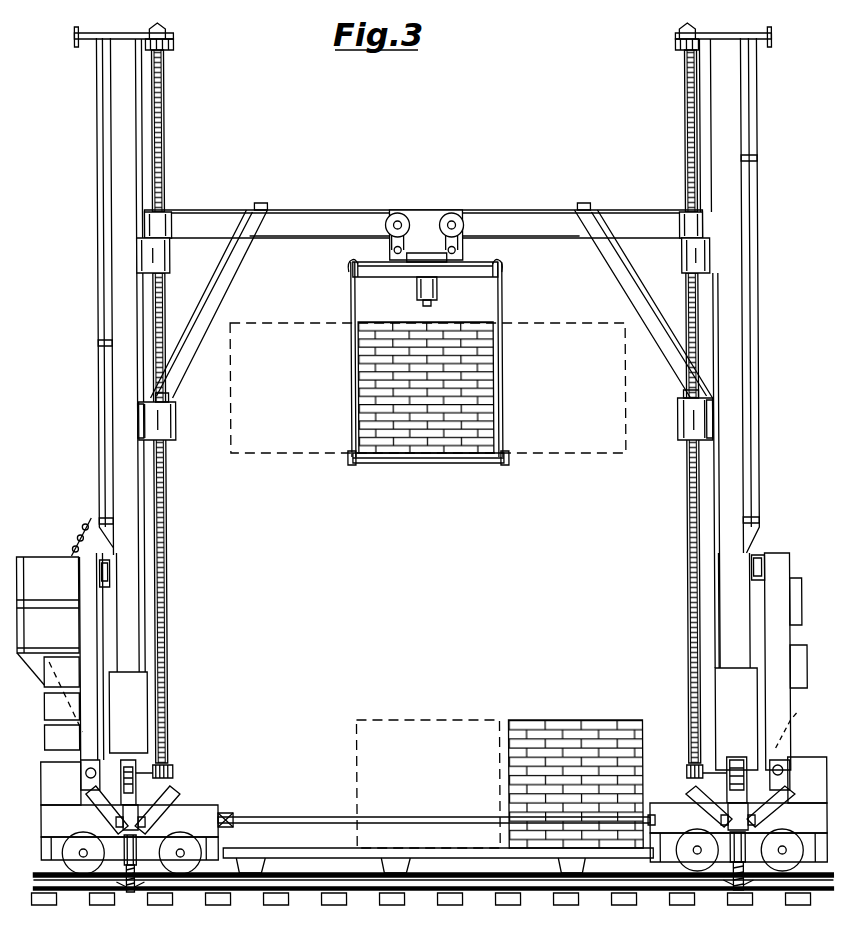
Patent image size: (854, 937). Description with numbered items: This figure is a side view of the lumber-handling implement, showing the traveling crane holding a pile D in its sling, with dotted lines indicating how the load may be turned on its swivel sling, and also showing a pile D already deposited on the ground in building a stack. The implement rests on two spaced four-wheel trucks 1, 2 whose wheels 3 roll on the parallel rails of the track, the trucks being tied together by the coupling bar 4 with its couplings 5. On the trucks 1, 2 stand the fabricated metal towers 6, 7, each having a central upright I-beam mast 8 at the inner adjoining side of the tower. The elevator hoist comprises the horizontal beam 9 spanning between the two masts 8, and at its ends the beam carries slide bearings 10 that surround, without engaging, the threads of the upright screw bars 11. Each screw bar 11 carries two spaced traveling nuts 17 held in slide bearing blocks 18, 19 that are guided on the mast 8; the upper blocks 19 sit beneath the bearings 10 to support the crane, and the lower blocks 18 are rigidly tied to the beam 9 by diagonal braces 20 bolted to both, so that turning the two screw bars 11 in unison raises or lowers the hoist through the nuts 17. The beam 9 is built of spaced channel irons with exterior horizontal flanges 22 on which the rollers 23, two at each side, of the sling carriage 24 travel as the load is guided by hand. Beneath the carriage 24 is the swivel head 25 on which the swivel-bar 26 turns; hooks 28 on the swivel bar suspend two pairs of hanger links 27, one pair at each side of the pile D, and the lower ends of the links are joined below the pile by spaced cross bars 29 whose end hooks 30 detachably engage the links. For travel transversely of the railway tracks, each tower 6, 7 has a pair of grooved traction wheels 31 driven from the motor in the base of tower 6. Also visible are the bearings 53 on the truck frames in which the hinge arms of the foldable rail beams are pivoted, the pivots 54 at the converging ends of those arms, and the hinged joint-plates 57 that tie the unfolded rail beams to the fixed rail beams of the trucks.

The truck 1 is at (196, 818).
The truck 2 is at (668, 810).
The wheels 3 is at (178, 872).
The coupling bar 4 is at (288, 822).
The couplings 5 is at (226, 818).
The tower 6 is at (117, 397).
The tower 7 is at (727, 447).
The mast 8 is at (142, 520).
The horizontal beam 9 is at (318, 222).
The slide bearings 10 is at (160, 222).
The screw bars 11 is at (165, 138).
The traveling nuts 17 is at (176, 427).
The slide bearing block 18 is at (140, 432).
The slide bearing block 19 is at (170, 261).
The diagonal braces 20 is at (198, 334).
The horizontal flanges 22 is at (297, 224).
The rollers 23 is at (457, 222).
The sling carriage 24 is at (430, 232).
The swivel head 25 is at (437, 292).
The swivel-bar 26 is at (481, 268).
The hanger links 27 is at (352, 372).
The hooks 28 is at (348, 270).
The cross bars 29 is at (479, 465).
The end hooks 30 is at (349, 463).
The traction wheels 31 is at (126, 765).
The bearings 53 is at (183, 790).
The pivot 54 is at (762, 822).
The hinged joint-plates 57 is at (100, 810).
The pile D is at (445, 450).